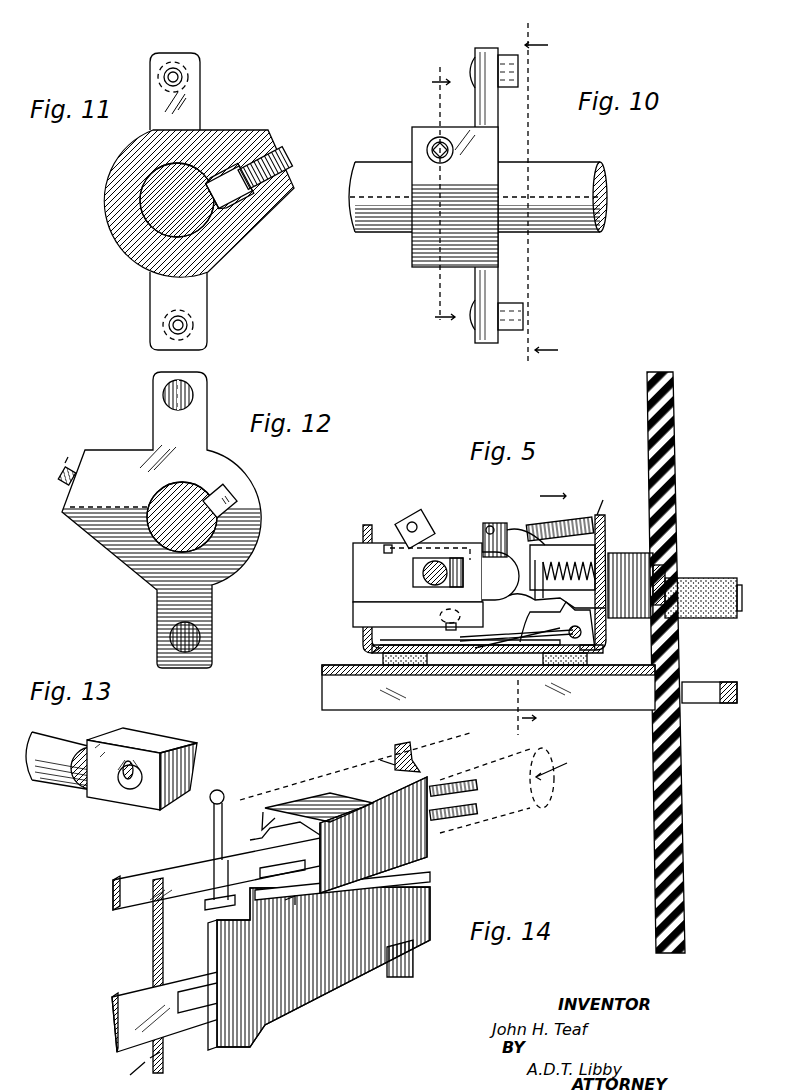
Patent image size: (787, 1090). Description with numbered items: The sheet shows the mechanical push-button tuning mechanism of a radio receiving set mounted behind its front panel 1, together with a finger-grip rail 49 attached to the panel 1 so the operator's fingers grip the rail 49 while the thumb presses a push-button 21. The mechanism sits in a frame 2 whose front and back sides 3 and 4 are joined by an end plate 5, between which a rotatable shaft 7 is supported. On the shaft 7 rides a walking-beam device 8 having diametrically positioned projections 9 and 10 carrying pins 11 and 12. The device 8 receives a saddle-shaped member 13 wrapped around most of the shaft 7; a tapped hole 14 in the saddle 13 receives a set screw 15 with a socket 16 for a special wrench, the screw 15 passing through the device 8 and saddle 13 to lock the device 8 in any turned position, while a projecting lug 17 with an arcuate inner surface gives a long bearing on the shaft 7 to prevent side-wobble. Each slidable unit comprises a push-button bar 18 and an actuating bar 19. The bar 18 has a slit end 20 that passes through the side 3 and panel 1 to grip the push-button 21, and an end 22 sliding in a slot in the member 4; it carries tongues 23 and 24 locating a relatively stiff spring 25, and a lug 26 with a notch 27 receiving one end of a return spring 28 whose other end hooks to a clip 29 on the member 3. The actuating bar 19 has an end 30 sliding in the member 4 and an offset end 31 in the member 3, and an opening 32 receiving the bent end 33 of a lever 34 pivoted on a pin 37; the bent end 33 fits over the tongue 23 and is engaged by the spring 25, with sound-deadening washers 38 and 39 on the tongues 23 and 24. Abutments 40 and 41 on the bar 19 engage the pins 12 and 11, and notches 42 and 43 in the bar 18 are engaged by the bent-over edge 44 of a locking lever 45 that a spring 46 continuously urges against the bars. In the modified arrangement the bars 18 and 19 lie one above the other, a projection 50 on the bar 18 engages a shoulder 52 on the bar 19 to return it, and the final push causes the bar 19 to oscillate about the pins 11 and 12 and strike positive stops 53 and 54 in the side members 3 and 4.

In FIG. 5, the front panel 1 is at (677, 458).
In FIG. 5, the frame 2 is at (358, 539).
In FIG. 5, the front side of frame 3 is at (611, 533).
In FIG. 14, the front side of frame 3 is at (414, 960).
In FIG. 5, the back side of frame 4 is at (372, 645).
In FIG. 5, the end plate 5 is at (368, 668).
In FIG. 11, the rotatable shaft 7 is at (130, 250).
In FIG. 10, the rotatable shaft 7 is at (555, 158).
In FIG. 12, the rotatable shaft 7 is at (215, 505).
In FIG. 13, the rotatable shaft 7 is at (62, 782).
In FIG. 5, the rotatable shaft 7 is at (450, 560).
In FIG. 11, the device 8 is at (112, 198).
In FIG. 10, the device 8 is at (412, 128).
In FIG. 12, the device 8 is at (250, 524).
In FIG. 11, the projection 9 is at (200, 120).
In FIG. 10, the projection 9 is at (498, 105).
In FIG. 12, the projection 9 is at (163, 412).
In FIG. 5, the projection 9 is at (432, 535).
In FIG. 11, the projection 10 is at (200, 305).
In FIG. 10, the projection 10 is at (498, 290).
In FIG. 12, the projection 10 is at (213, 607).
In FIG. 5, the projection 10 is at (454, 572).
In FIG. 11, the pin 11 is at (186, 77).
In FIG. 10, the pin 11 is at (505, 28).
In FIG. 12, the pin 11 is at (163, 393).
In FIG. 5, the pin 11 is at (416, 522).
In FIG. 11, the pin 12 is at (168, 316).
In FIG. 10, the pin 12 is at (510, 333).
In FIG. 12, the pin 12 is at (203, 637).
In FIG. 5, the pin 12 is at (483, 572).
In FIG. 11, the saddle-shaped member 13 is at (238, 140).
In FIG. 13, the saddle-shaped member 13 is at (183, 752).
In FIG. 11, the tapped hole 14 is at (268, 142).
In FIG. 13, the tapped hole 14 is at (122, 790).
In FIG. 11, the set screw 15 is at (280, 150).
In FIG. 10, the set screw 15 is at (440, 140).
In FIG. 12, the set screw 15 is at (70, 460).
In FIG. 5, the set screw 15 is at (388, 545).
In FIG. 11, the socket 16 is at (297, 158).
In FIG. 10, the socket 16 is at (428, 152).
In FIG. 10, the projecting lug 17 is at (535, 185).
In FIG. 12, the projecting lug 17 is at (232, 500).
In FIG. 5, the projecting lug 17 is at (470, 540).
In FIG. 5, the push-button bar 18 is at (390, 637).
In FIG. 14, the push-button bar 18 is at (216, 832).
In FIG. 5, the actuating bar 19 is at (446, 558).
In FIG. 14, the actuating bar 19 is at (322, 975).
In FIG. 14, the end of push-button bar 20 is at (459, 831).
In FIG. 5, the push-button 21 is at (703, 578).
In FIG. 14, the push-button 21 is at (506, 830).
In FIG. 5, the end of push-button bar 22 is at (400, 618).
In FIG. 14, the end of push-button bar 22 is at (150, 903).
In FIG. 14, the tongue 23 is at (288, 902).
In FIG. 14, the tongue 24 is at (342, 890).
In FIG. 5, the spring 25 is at (580, 522).
In FIG. 14, the spring 25 is at (187, 933).
In FIG. 5, the lug 26 is at (525, 530).
In FIG. 14, the lug 26 is at (220, 790).
In FIG. 5, the notch 27 is at (515, 525).
In FIG. 14, the notch 27 is at (210, 800).
In FIG. 5, the spring 28 is at (598, 515).
In FIG. 14, the spring 28 is at (355, 766).
In FIG. 5, the clip 29 is at (606, 505).
In FIG. 5, the end of actuating bar 30 is at (353, 580).
In FIG. 14, the end of actuating bar 30 is at (150, 992).
In FIG. 5, the end of actuating bar 31 is at (611, 513).
In FIG. 14, the opening 32 is at (200, 975).
In FIG. 5, the bent end 33 is at (560, 545).
In FIG. 5, the lever 34 is at (543, 468).
In FIG. 5, the pin 37 is at (500, 524).
In FIG. 5, the washer 38 is at (521, 612).
In FIG. 5, the washer 39 is at (611, 615).
In FIG. 5, the abutment 40 is at (434, 619).
In FIG. 5, the abutment 41 is at (490, 526).
In FIG. 5, the notch 42 is at (548, 645).
In FIG. 14, the notch 42 is at (272, 832).
In FIG. 5, the notch 43 is at (583, 672).
In FIG. 14, the notch 43 is at (325, 810).
In FIG. 5, the bent-over edge 44 is at (500, 640).
In FIG. 14, the bent-over edge 44 is at (430, 840).
In FIG. 5, the locking lever 45 is at (512, 660).
In FIG. 14, the locking lever 45 is at (422, 762).
In FIG. 5, the spring 46 is at (472, 658).
In FIG. 14, the spring 46 is at (166, 1060).
In FIG. 5, the rail 49 is at (730, 703).
In FIG. 14, the projection 50 is at (210, 904).
In FIG. 14, the shoulder 52 is at (290, 856).
In FIG. 14, the positive stop 53 is at (432, 868).
In FIG. 14, the positive stop 54 is at (150, 1058).